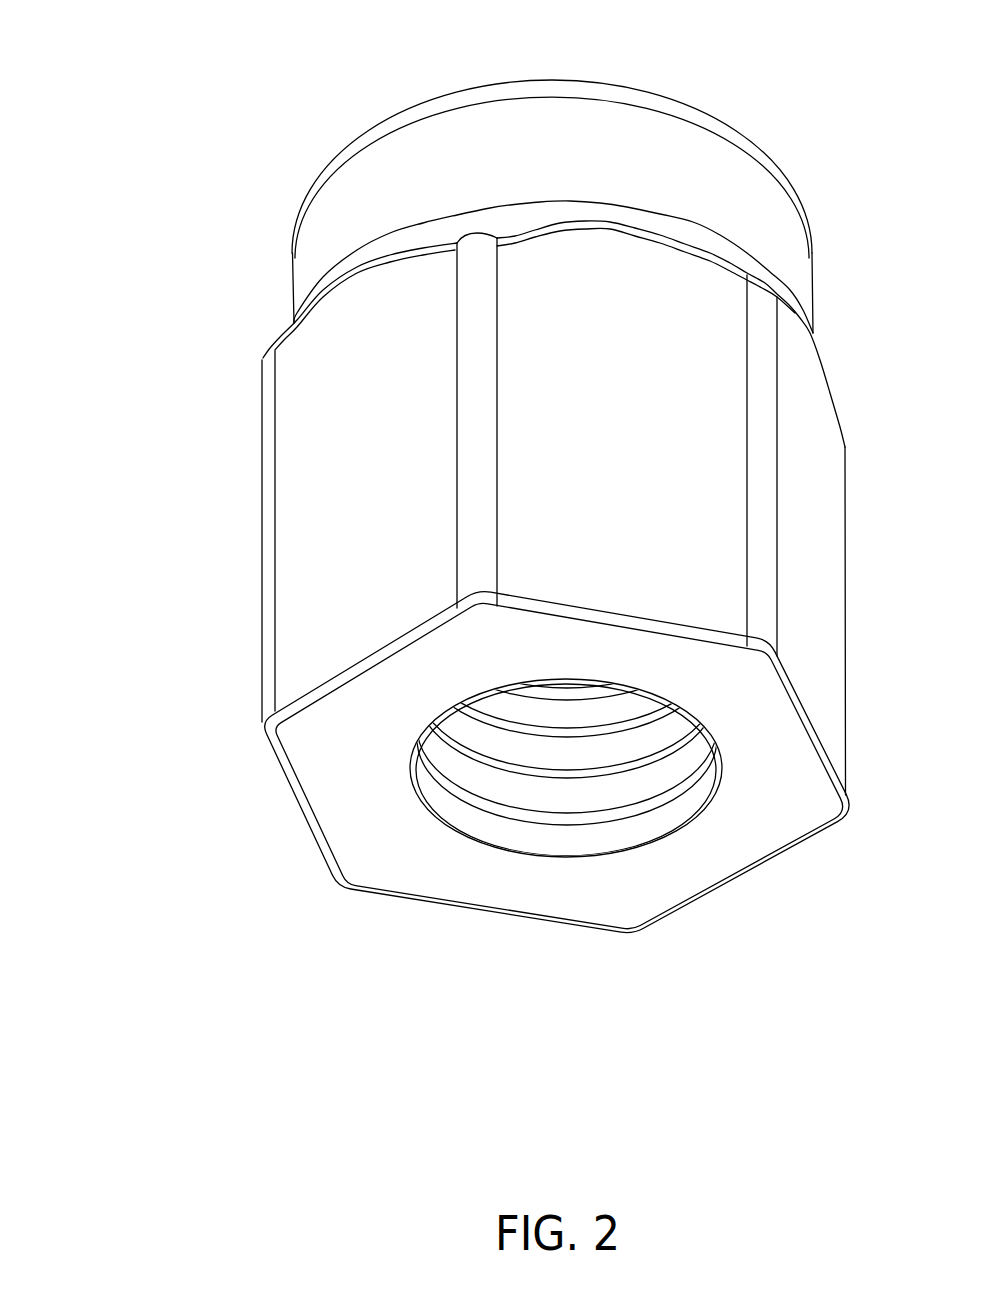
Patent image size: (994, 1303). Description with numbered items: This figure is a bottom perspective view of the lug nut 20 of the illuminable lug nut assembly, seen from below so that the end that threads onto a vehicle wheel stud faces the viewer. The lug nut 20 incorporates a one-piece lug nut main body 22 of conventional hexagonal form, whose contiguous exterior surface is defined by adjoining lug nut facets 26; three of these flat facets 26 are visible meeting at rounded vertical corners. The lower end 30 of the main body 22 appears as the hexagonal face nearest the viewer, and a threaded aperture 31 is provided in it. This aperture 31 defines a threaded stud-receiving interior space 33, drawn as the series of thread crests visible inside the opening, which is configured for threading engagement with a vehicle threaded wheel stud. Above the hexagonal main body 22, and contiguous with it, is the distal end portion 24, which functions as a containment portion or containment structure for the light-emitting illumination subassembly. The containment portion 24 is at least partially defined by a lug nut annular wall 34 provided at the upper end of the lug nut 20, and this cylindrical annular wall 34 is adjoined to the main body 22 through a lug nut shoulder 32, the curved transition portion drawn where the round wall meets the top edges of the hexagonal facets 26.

The lug nut 20 is at (127, 128).
The lug nut main body 22 is at (262, 505).
The distal end portion 24 is at (335, 213).
The facets 26 is at (370, 477).
The lower end 30 is at (373, 775).
The threaded aperture 31 is at (487, 830).
The lug nut shoulder 32 is at (747, 262).
The threaded stud-receiving interior space 33 is at (630, 820).
The lug nut annular wall 34 is at (573, 172).